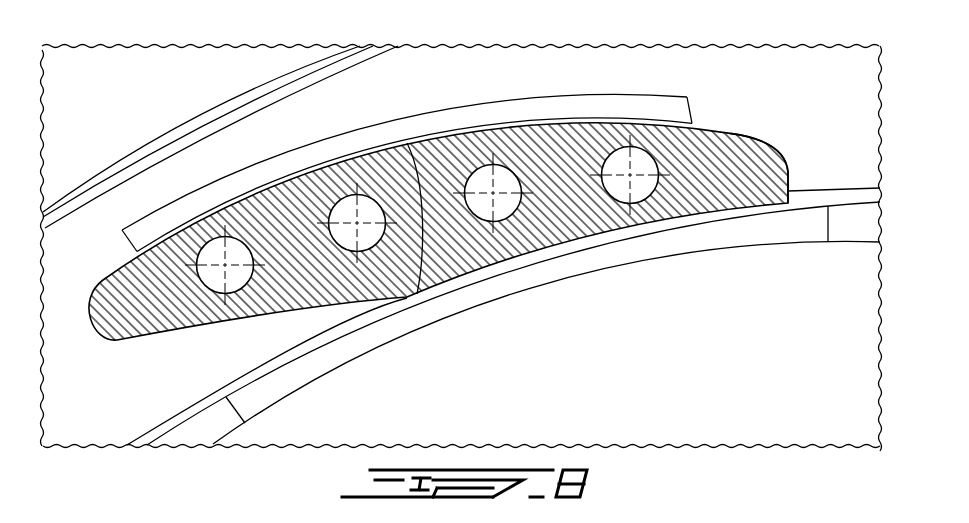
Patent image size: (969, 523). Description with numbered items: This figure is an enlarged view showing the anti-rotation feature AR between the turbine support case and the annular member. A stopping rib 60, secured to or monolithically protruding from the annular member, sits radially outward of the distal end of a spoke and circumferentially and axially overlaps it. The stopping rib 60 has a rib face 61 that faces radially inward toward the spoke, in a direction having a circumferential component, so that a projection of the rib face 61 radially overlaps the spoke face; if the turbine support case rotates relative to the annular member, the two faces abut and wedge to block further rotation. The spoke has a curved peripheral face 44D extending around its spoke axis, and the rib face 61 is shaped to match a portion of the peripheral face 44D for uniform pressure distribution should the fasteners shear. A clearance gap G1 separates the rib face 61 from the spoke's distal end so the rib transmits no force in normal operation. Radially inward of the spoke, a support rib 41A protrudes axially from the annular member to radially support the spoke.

The anti-rotation feature AR is at (467, 95).
The stopping rib 60 is at (577, 113).
The clearance gap G1 is at (262, 188).
The peripheral face 44D is at (740, 133).
The rib face 61 is at (417, 294).
The support rib 41A is at (727, 232).